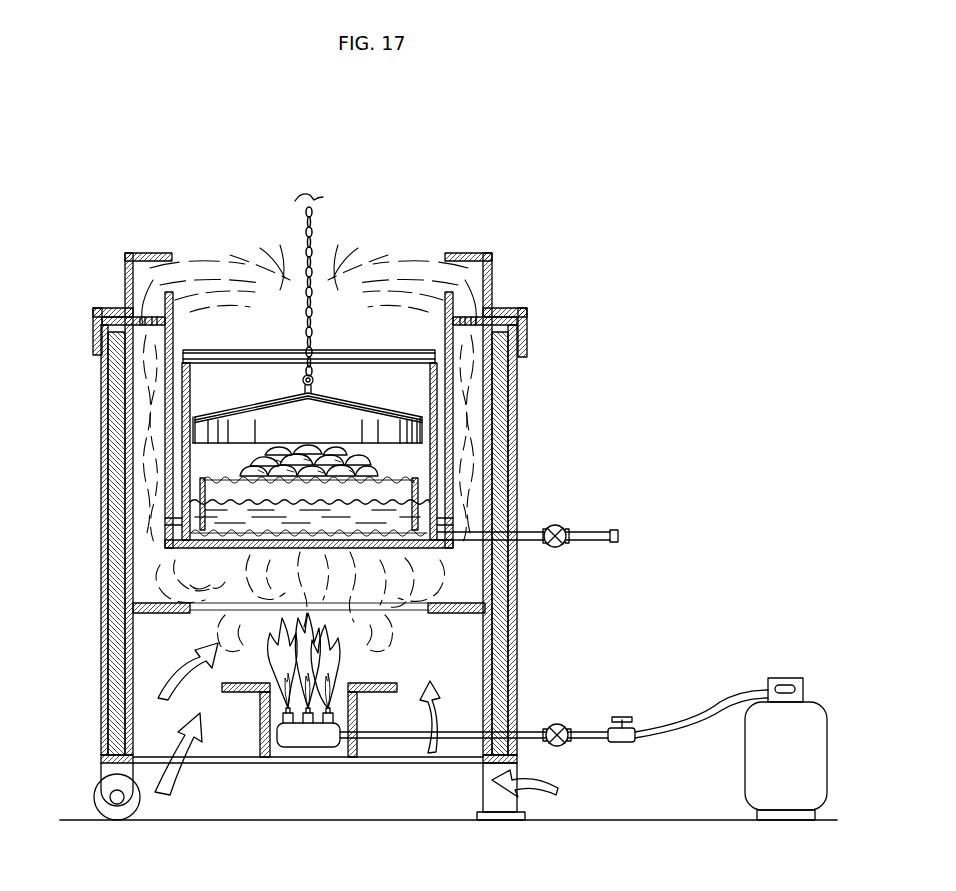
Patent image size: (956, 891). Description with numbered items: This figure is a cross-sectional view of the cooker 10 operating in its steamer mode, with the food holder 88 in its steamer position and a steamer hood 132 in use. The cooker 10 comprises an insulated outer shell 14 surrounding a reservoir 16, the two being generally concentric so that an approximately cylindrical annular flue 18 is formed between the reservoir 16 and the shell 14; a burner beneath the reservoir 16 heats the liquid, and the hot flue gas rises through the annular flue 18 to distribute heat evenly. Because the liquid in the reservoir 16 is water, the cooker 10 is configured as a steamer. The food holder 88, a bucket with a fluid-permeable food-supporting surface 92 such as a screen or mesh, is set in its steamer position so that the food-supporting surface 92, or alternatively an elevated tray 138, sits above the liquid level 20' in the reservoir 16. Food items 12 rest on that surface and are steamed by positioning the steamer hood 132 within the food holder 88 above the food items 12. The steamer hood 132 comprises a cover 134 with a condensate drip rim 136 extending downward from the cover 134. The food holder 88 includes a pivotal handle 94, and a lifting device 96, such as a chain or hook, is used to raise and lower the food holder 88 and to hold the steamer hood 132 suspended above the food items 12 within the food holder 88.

The cooker 10 is at (599, 234).
The food items 12 is at (358, 461).
The insulated outer shell 14 is at (101, 672).
The reservoir 16 is at (163, 397).
The annular flue 18 is at (476, 503).
The liquid level 20' is at (239, 451).
The food holder 88 is at (243, 350).
The food-supporting surface 92 is at (240, 533).
The handle 94 is at (329, 369).
The lifting device 96 is at (314, 321).
The steamer hood 132 is at (424, 408).
The cover 134 is at (275, 396).
The condensate drip rim 136 is at (422, 430).
The elevated tray 138 is at (244, 470).